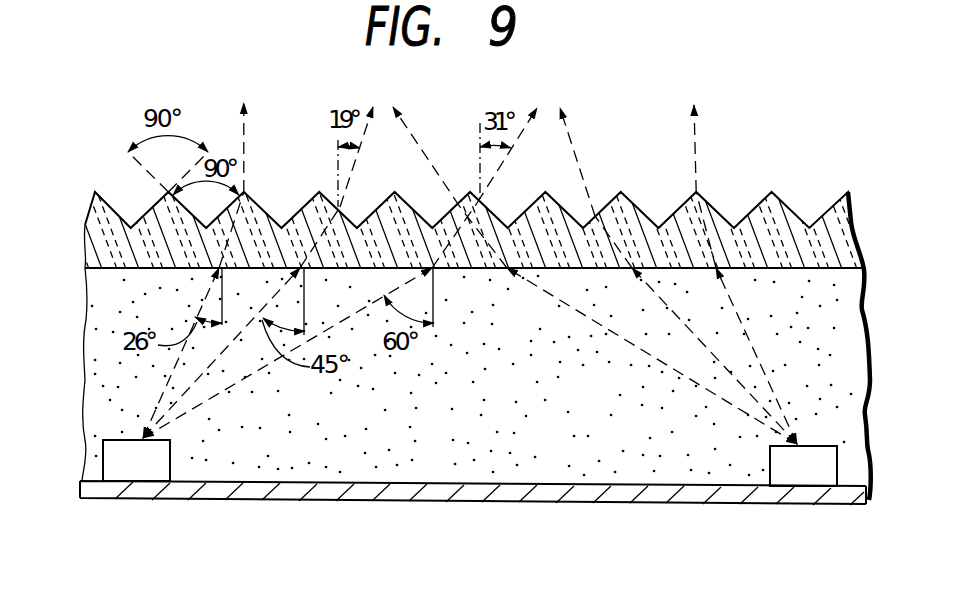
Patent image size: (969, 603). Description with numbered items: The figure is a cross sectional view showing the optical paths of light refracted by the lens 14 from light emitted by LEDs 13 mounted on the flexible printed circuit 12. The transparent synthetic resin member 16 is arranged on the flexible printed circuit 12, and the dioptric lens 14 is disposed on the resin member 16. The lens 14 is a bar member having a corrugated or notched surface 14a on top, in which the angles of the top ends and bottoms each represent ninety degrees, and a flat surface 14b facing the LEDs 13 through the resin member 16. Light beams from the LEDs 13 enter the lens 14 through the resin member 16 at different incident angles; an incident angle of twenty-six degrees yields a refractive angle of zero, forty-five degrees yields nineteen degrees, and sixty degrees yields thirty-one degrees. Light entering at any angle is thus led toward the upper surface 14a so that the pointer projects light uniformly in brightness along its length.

The flexible printed circuit 12 is at (143, 490).
The LEDs 13 is at (117, 467).
The lens 14 is at (467, 222).
The corrugated surface 14a is at (303, 203).
The flat surface 14b is at (306, 272).
The transparent synthetic resin member 16 is at (122, 278).